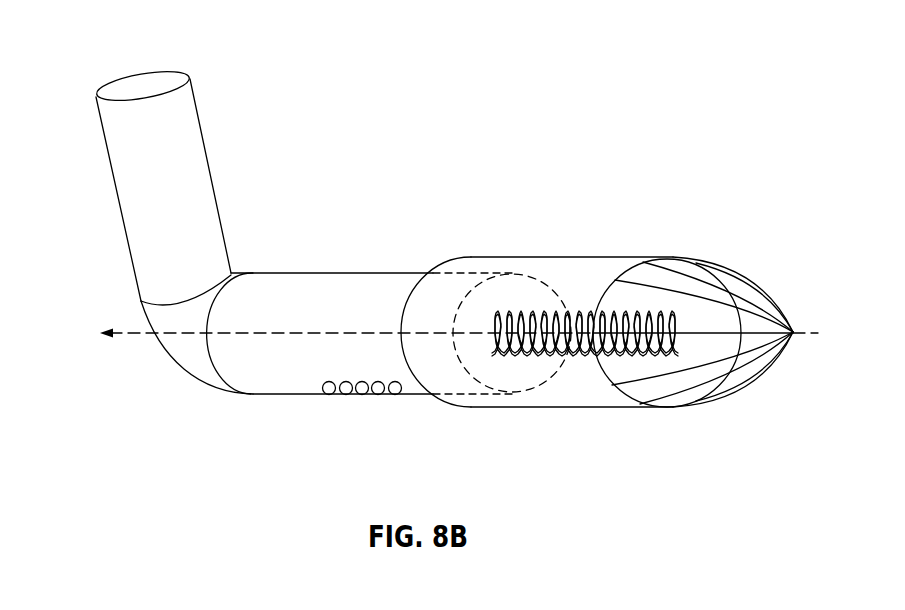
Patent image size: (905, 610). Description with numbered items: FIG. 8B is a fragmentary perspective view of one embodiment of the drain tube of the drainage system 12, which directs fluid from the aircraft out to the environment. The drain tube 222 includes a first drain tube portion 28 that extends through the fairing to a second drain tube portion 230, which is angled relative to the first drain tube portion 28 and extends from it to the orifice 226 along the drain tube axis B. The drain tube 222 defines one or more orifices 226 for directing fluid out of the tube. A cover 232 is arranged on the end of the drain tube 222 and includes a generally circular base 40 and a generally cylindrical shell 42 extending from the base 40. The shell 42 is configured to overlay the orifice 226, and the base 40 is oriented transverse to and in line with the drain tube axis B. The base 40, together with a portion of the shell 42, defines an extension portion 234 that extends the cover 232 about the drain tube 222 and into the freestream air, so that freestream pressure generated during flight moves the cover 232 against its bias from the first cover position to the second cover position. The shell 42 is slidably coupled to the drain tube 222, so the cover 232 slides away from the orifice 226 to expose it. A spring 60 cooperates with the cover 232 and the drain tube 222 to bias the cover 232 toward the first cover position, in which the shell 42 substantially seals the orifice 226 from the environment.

The drainage system 12 is at (268, 153).
The first drain tube portion 28 is at (112, 167).
The drain tube 222 is at (268, 237).
The second drain tube portion 230 is at (273, 394).
The orifice 226 is at (327, 395).
The cover 232 is at (505, 252).
The shell 42 is at (575, 393).
The spring 60 is at (657, 310).
The base 40 is at (705, 289).
The extension portion 234 is at (583, 279).
The drain tube axis B is at (830, 333).